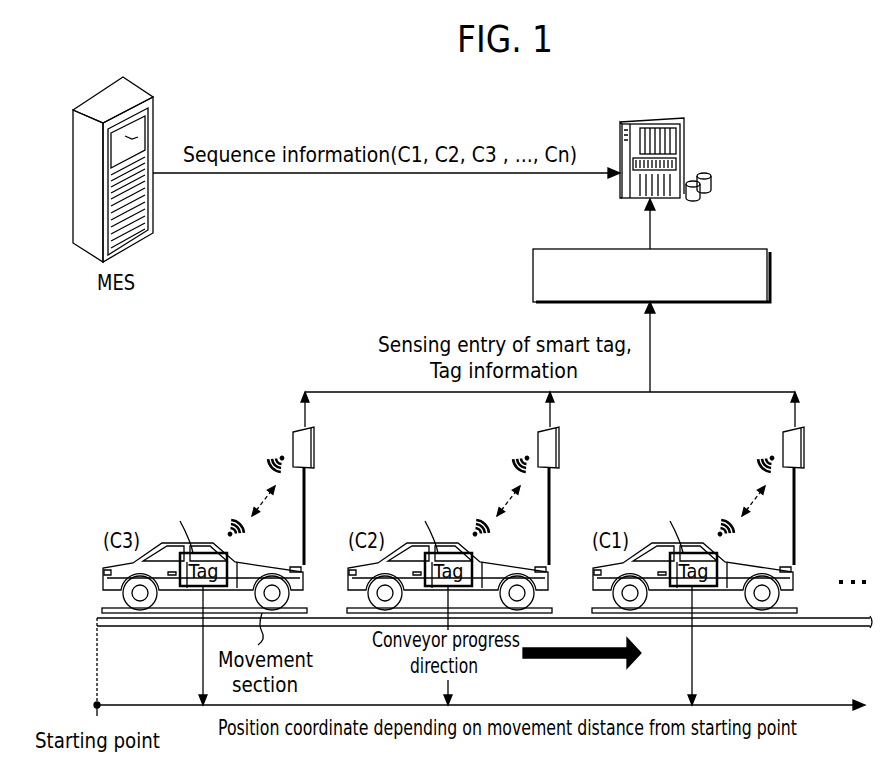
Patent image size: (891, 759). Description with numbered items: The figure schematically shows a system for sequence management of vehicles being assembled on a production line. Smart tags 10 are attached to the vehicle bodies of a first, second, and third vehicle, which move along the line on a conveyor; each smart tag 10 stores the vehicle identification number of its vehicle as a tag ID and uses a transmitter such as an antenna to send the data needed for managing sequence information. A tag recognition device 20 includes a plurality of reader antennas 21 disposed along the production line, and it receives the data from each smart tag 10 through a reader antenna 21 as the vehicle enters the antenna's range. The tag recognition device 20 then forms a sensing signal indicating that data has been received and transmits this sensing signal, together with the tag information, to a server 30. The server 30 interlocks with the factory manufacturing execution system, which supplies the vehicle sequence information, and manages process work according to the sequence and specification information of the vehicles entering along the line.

The smart tag 10 is at (444, 542).
The tag recognition device 20 is at (771, 277).
The reader antenna 21 is at (316, 438).
The server 30 is at (683, 138).